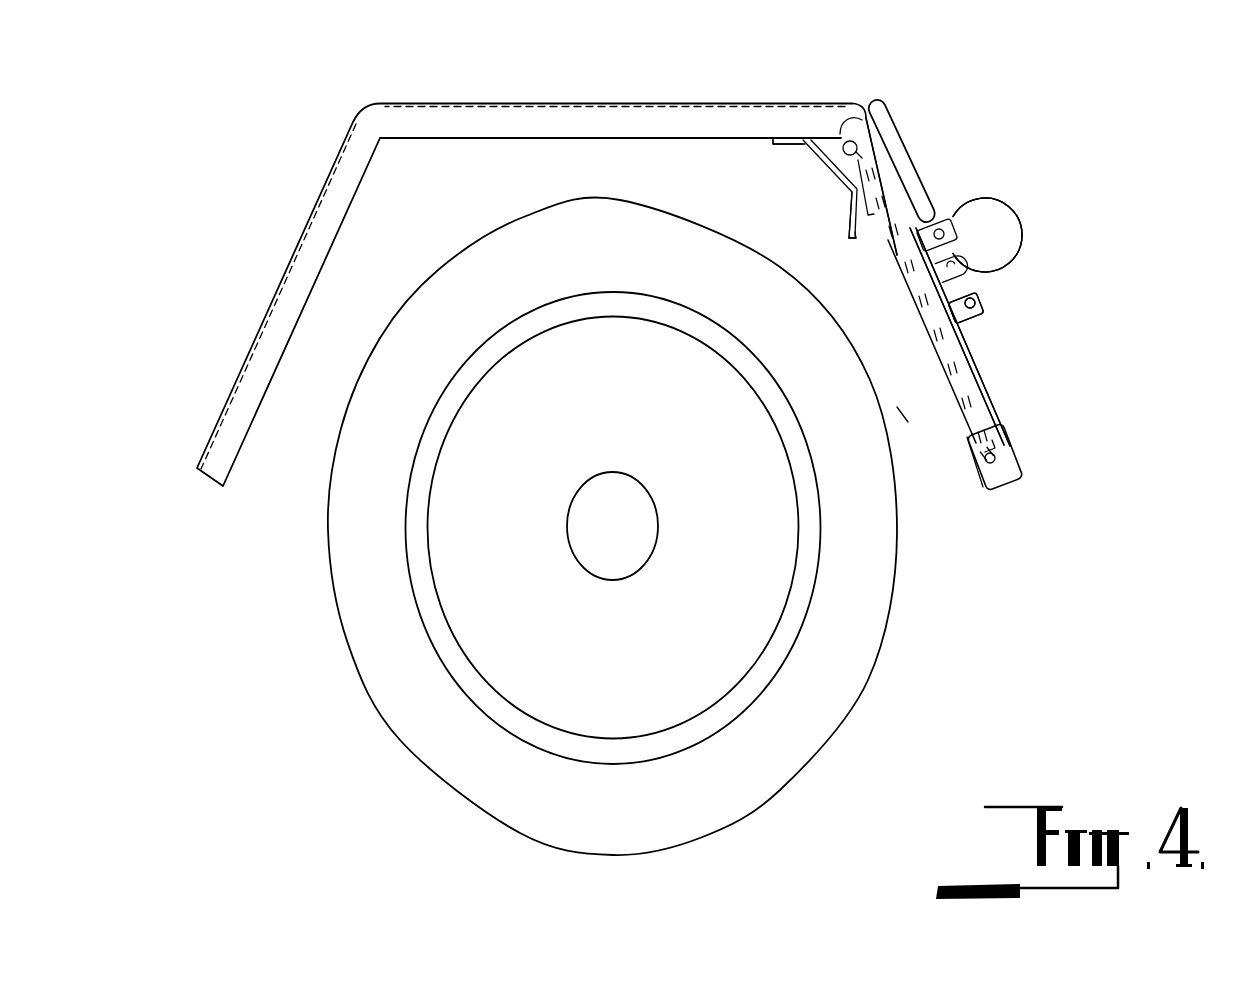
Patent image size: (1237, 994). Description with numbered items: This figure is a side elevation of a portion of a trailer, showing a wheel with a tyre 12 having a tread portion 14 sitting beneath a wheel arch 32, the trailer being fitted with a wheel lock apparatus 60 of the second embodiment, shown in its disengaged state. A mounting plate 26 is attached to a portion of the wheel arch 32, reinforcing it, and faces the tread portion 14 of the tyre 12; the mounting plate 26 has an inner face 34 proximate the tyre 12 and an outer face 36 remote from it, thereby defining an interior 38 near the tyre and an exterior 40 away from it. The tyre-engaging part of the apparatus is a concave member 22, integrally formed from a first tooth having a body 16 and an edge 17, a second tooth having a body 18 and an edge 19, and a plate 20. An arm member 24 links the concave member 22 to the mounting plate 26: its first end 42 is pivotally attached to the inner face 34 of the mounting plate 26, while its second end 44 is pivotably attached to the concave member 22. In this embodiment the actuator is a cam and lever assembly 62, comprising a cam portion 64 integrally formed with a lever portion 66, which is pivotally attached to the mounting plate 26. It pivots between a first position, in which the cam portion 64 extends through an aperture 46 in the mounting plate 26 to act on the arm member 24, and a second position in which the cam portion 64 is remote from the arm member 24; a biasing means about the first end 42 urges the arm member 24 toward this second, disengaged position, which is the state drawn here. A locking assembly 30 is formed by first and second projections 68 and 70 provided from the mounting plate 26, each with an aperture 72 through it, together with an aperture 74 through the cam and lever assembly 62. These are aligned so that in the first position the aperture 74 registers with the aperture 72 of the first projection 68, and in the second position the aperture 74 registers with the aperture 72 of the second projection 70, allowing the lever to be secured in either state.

The tyre 12 is at (881, 684).
The tread portion 14 is at (895, 630).
The body of first tooth 16 is at (803, 144).
The edge of first tooth 17 is at (775, 146).
The body of second tooth 18 is at (868, 222).
The edge of second tooth 19 is at (849, 239).
The plate 20 is at (847, 208).
The concave member 22 is at (765, 150).
The arm member 24 is at (963, 405).
The mounting plate 26 is at (1005, 402).
The locking assembly 30 is at (994, 318).
The wheel arch 32 is at (762, 118).
The inner face 34 is at (967, 437).
The outer face 36 is at (993, 384).
The interior 38 is at (914, 431).
The exterior 40 is at (938, 220).
The first end of arm member 42 is at (1013, 478).
The second end of arm member 44 is at (848, 156).
The aperture 46 is at (950, 366).
The wheel lock apparatus 60 is at (1131, 177).
The cam and lever assembly 62 is at (1031, 262).
The cam portion 64 is at (1020, 232).
The lever portion 66 is at (892, 134).
The first projection 68 is at (992, 303).
The second projection 70 is at (941, 227).
The aperture 72 is at (985, 318).
The aperture 74 is at (947, 230).